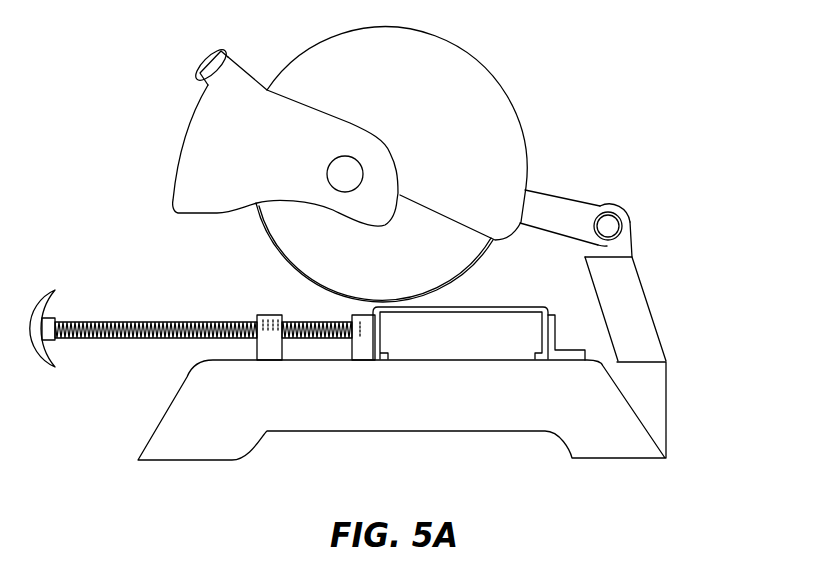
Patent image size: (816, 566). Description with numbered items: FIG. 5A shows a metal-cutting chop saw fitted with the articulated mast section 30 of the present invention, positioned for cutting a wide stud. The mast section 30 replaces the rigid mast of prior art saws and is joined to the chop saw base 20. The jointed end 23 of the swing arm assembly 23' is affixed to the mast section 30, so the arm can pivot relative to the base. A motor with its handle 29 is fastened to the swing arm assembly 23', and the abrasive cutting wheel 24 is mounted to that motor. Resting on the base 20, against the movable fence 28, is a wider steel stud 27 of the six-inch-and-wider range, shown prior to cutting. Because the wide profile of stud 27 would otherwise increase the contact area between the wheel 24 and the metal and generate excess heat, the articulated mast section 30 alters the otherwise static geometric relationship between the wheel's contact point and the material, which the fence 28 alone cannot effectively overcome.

The chop saw base 20 is at (647, 408).
The jointed end 23 is at (654, 195).
The swing arm assembly 23' is at (594, 183).
The abrasive cutting wheel 24 is at (308, 251).
The wider steel stud 27 is at (521, 306).
The movable fence 28 is at (557, 338).
The handle 29 is at (198, 73).
The mast section 30 is at (648, 287).